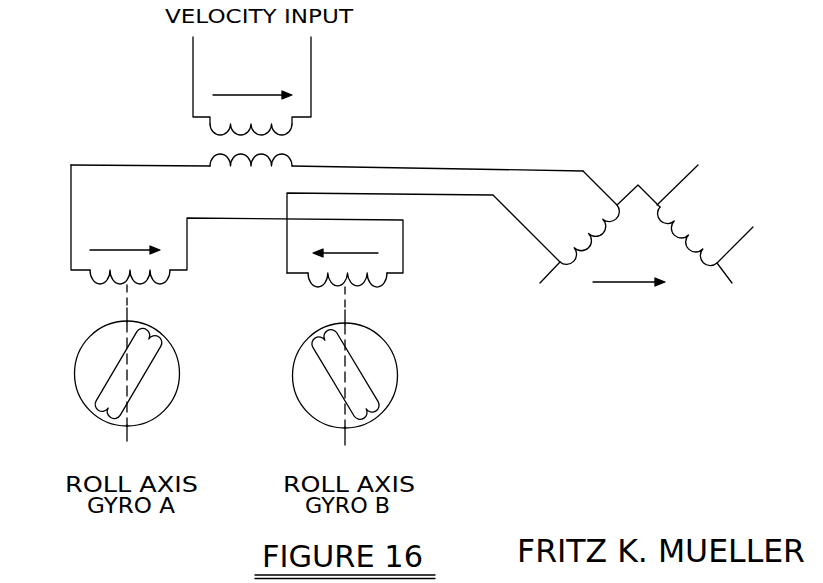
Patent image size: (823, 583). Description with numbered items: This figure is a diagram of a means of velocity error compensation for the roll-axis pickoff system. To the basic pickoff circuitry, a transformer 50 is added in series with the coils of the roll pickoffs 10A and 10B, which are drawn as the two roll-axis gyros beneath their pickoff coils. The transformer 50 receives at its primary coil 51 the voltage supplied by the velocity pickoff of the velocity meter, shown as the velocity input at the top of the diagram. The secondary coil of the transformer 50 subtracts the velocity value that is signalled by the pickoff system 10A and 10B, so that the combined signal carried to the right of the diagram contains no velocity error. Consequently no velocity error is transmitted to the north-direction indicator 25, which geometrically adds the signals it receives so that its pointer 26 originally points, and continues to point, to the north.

The roll pickoff 10A is at (86, 326).
The roll pickoff 10B is at (398, 334).
The north-direction indicator 25 is at (646, 224).
The pointer 26 is at (629, 294).
The transformer 50 is at (304, 127).
The primary coil 51 is at (210, 121).